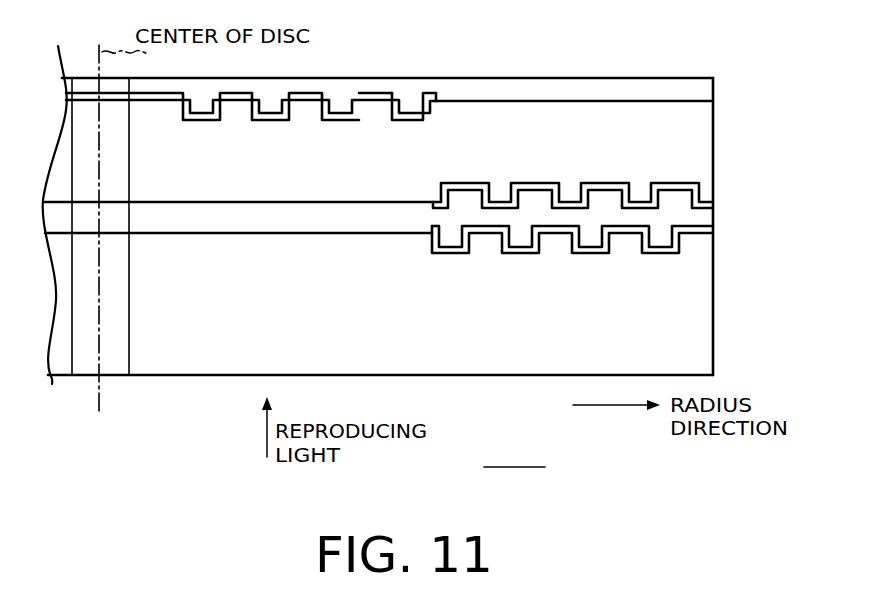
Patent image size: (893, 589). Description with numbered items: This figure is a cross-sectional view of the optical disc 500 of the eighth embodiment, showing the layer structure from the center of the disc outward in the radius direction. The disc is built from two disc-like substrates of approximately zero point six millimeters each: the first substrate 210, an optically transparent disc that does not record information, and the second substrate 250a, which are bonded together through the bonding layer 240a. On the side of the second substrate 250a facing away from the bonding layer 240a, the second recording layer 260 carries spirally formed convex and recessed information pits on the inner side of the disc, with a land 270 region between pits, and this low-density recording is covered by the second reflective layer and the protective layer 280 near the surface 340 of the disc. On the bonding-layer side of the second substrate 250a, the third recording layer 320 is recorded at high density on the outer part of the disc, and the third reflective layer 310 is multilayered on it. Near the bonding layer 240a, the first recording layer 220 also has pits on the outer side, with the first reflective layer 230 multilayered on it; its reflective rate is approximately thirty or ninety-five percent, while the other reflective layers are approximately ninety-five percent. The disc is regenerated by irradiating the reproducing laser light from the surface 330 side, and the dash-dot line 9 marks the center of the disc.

The center axis of disc 9 is at (113, 363).
The first substrate 210 is at (703, 337).
The first recording layer 220 is at (555, 238).
The first reflective layer 230 is at (707, 233).
The bonding layer 240a is at (708, 215).
The second substrate 250a is at (705, 128).
The second recording layer 260 is at (305, 101).
The second reflective layer 270 is at (378, 100).
The protective layer 280 is at (707, 94).
The third reflective layer 310 is at (705, 205).
The third recording layer 320 is at (683, 185).
The surface 330 is at (195, 377).
The surface 340 is at (512, 79).
The optical disc 500 is at (514, 452).